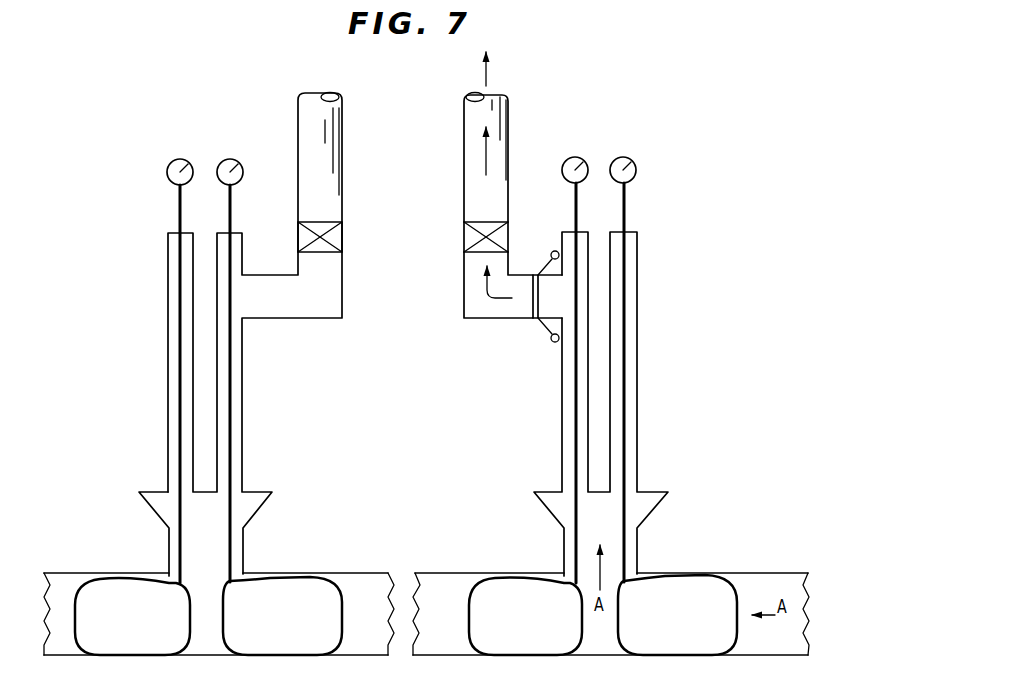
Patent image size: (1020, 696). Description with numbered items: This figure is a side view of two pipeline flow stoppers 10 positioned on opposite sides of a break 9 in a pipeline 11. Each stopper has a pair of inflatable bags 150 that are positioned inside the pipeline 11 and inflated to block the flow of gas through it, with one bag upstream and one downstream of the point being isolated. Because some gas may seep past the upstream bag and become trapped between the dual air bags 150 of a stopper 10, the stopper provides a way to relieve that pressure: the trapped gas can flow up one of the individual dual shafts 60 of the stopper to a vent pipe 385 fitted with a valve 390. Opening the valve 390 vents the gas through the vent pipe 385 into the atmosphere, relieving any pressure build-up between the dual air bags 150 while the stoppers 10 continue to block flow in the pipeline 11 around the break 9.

The pipeline flow stopper 10 is at (398, 317).
The pipeline 11 is at (337, 570).
The break 9 is at (402, 570).
The inflatable bag 150 is at (105, 583).
The individual dual shaft 60 is at (562, 422).
The vent pipe 385 is at (498, 323).
The valve 390 is at (463, 237).